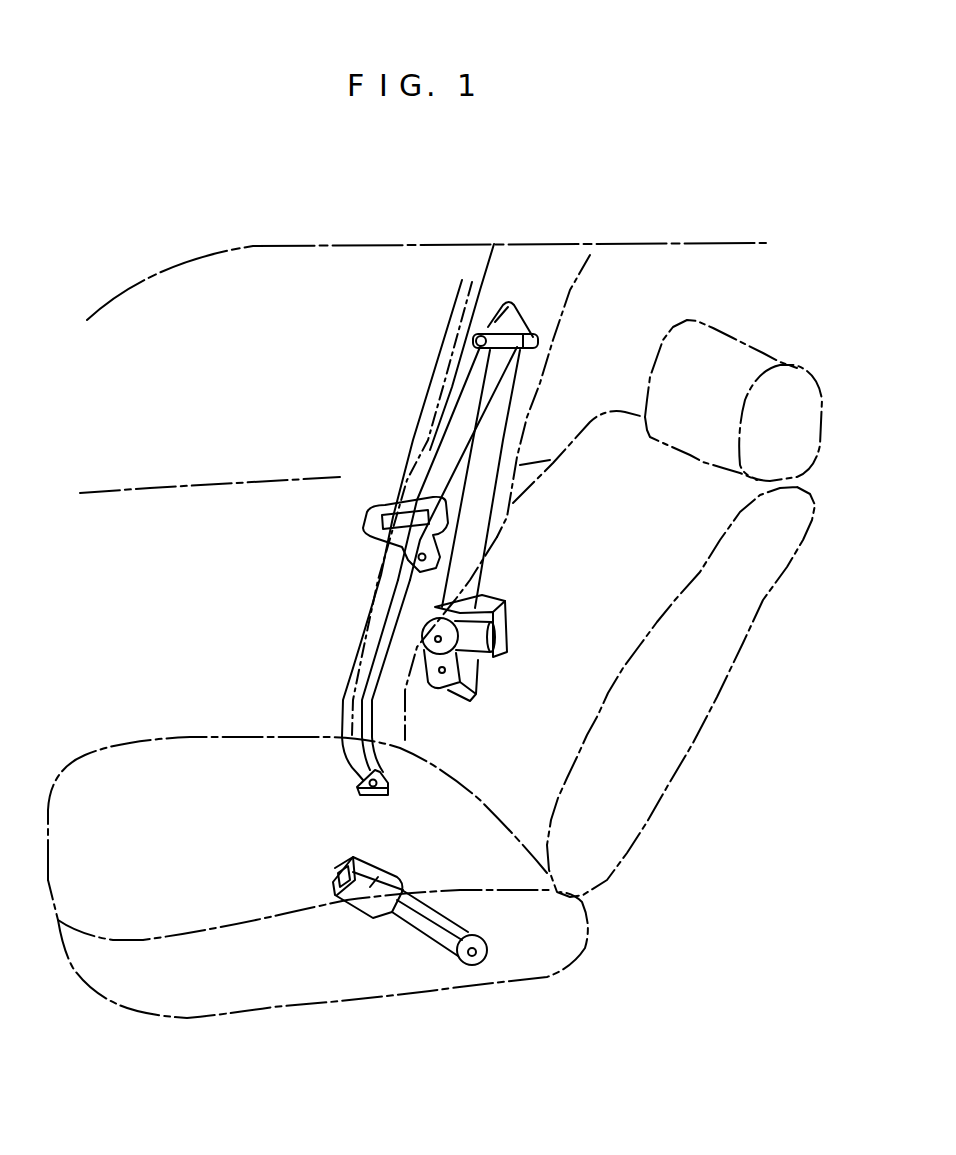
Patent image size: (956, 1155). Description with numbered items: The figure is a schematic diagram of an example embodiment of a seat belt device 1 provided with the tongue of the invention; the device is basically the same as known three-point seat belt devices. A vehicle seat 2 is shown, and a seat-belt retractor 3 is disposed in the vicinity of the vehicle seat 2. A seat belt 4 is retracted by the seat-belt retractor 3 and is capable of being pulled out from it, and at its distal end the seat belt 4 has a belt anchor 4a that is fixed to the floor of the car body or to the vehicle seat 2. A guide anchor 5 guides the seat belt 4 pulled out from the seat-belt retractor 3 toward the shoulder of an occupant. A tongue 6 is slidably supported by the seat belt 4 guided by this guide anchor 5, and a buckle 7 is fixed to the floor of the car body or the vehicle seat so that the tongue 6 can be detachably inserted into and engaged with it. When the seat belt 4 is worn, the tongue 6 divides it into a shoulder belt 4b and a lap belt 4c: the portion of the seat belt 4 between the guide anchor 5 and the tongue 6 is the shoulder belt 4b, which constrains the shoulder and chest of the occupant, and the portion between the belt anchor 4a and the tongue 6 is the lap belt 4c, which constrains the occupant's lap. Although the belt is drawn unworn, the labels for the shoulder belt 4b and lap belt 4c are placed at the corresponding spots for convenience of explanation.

The seat belt device 1 is at (557, 726).
The vehicle seat 2 is at (188, 982).
The seat-belt retractor 3 is at (508, 632).
The seat belt 4 is at (458, 412).
The belt anchor 4a is at (385, 796).
The shoulder belt 4b is at (453, 443).
The lap belt 4c is at (357, 647).
The guide anchor 5 is at (520, 312).
The tongue 6 is at (370, 527).
The buckle 7 is at (346, 903).